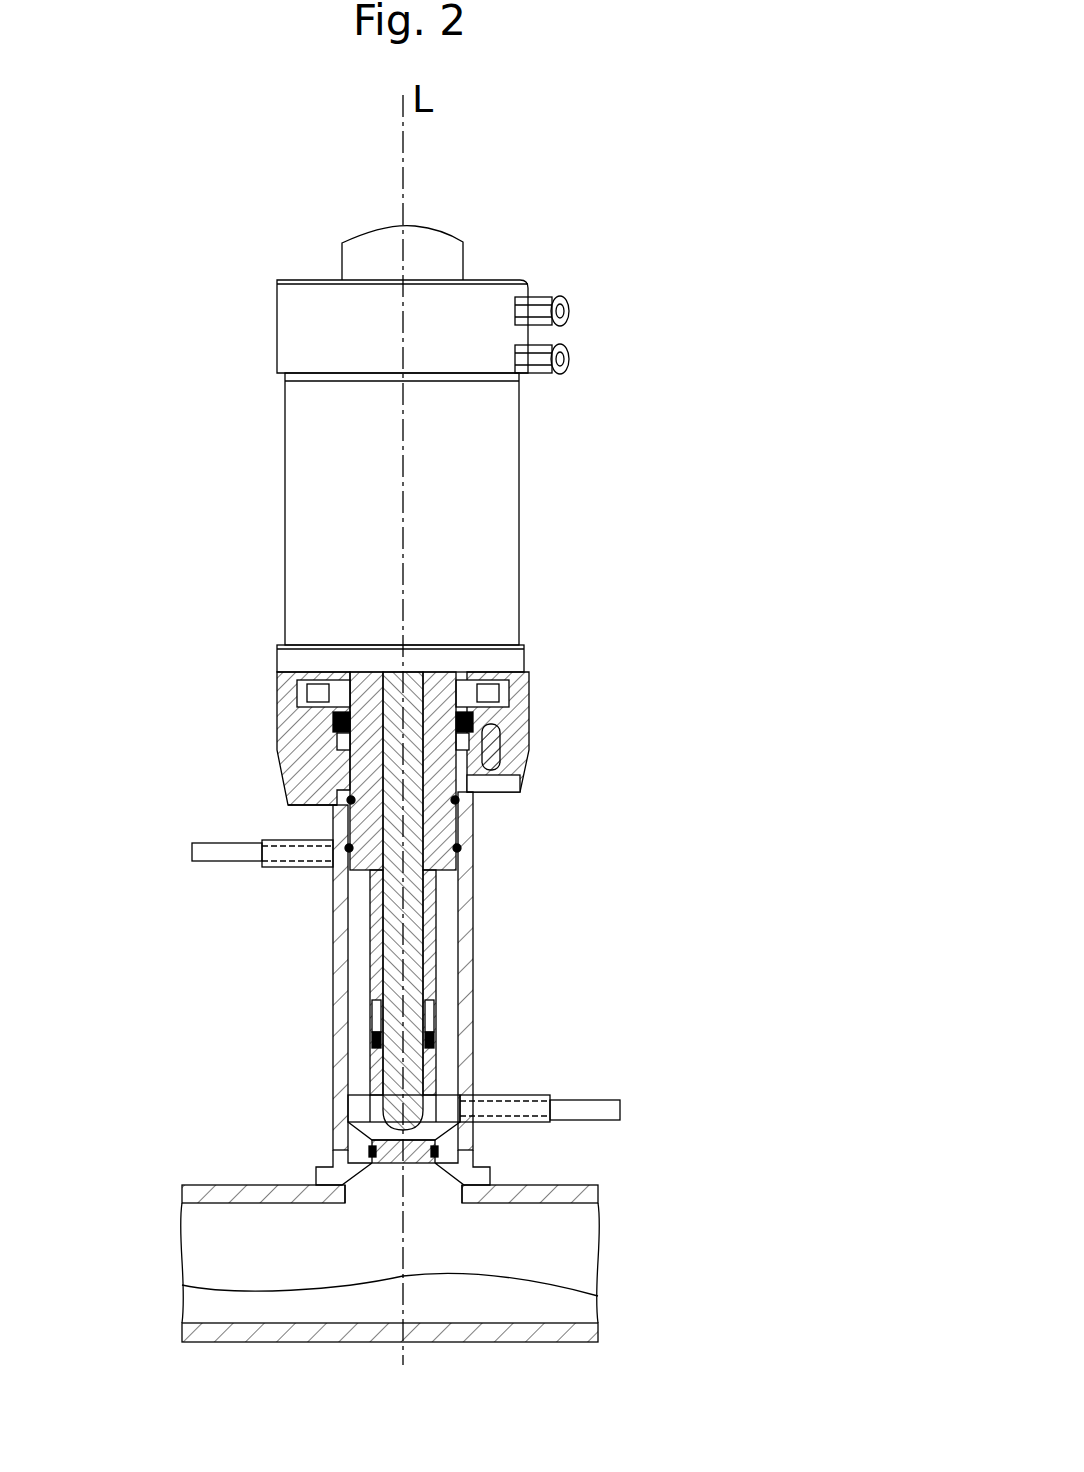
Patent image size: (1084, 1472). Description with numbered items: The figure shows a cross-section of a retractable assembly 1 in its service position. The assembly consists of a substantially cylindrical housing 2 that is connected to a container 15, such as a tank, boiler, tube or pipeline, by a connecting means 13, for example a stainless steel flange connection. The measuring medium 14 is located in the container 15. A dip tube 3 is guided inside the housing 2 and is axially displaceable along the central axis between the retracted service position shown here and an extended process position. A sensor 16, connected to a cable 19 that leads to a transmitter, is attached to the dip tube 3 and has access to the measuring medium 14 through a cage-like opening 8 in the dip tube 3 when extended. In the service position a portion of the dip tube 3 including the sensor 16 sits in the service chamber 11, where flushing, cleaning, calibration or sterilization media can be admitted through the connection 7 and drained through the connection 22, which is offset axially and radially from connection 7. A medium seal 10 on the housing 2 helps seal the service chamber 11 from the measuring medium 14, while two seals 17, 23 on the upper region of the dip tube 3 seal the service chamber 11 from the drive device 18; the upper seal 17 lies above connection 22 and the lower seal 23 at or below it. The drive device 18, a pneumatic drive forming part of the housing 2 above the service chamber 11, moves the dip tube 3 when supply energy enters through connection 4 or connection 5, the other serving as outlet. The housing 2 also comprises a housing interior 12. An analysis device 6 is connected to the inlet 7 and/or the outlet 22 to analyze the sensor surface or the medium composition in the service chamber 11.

The retractable assembly 1 is at (232, 410).
The housing 2 is at (232, 495).
The dip tube 3 is at (372, 940).
The connection 4 is at (580, 310).
The connection 5 is at (580, 350).
The analysis device 6 is at (227, 853).
The connection 7 is at (498, 1105).
The opening 8 is at (363, 1197).
The medium seal 10 is at (443, 1150).
The service chamber 11 is at (443, 1007).
The housing interior 12 is at (485, 537).
The connecting means 13 is at (305, 1182).
The measuring medium 14 is at (558, 1307).
The container 15 is at (580, 1193).
The sensor 16 is at (412, 1057).
The seal 17 is at (455, 800).
The drive device 18 is at (538, 275).
The cable 19 is at (376, 247).
The connection 22 is at (285, 847).
The seal 23 is at (458, 849).